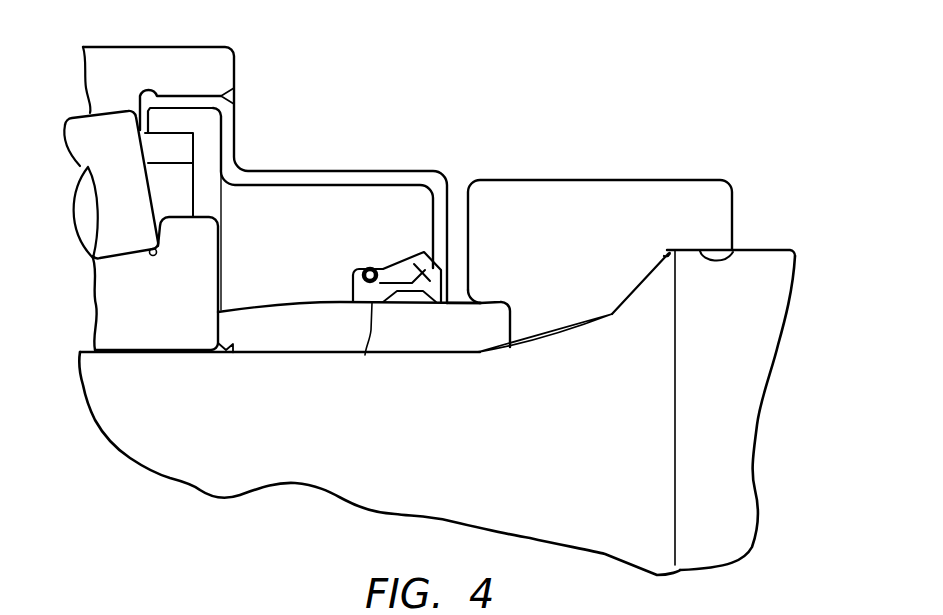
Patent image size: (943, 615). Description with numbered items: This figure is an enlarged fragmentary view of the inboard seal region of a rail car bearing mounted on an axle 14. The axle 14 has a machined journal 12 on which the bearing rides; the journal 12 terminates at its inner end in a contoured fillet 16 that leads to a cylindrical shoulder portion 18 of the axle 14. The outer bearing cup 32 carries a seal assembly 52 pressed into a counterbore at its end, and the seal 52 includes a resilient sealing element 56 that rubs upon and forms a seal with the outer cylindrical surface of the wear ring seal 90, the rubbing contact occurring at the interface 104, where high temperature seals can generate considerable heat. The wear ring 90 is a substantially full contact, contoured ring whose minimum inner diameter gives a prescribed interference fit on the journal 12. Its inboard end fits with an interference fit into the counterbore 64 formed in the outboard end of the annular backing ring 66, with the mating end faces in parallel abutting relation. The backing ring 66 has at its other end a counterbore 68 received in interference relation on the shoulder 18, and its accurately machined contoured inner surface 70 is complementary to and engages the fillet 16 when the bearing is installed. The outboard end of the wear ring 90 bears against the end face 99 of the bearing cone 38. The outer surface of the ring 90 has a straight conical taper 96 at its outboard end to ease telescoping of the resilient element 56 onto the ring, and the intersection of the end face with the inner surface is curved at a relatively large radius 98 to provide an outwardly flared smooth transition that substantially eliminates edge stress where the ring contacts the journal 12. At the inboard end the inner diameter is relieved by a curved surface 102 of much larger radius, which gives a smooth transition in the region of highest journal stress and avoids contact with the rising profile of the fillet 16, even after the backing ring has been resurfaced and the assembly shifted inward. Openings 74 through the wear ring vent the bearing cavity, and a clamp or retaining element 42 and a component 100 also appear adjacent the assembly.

The journal 12 is at (413, 461).
The axle 14 is at (763, 429).
The fillet 16 is at (610, 316).
The cylindrical shoulder portion 18 is at (783, 270).
The bearing cup 32 is at (203, 60).
The bearing cone 38 is at (121, 358).
The clamp member 42 is at (91, 165).
The seal assembly 52 is at (363, 178).
The resilient sealing element 56 is at (387, 282).
The counterbore 64 is at (480, 307).
The backing ring 66 is at (644, 192).
The counterbore 68 is at (740, 251).
The contoured inner surface 70 is at (643, 285).
The openings 74 is at (493, 301).
The wear ring seal 90 is at (390, 340).
The conical taper 96 is at (258, 303).
The curved surface 98 is at (233, 354).
The end face 99 is at (216, 290).
The plate upper surface 100 is at (218, 312).
The curved surface 102 is at (492, 357).
The interface 104 is at (370, 312).